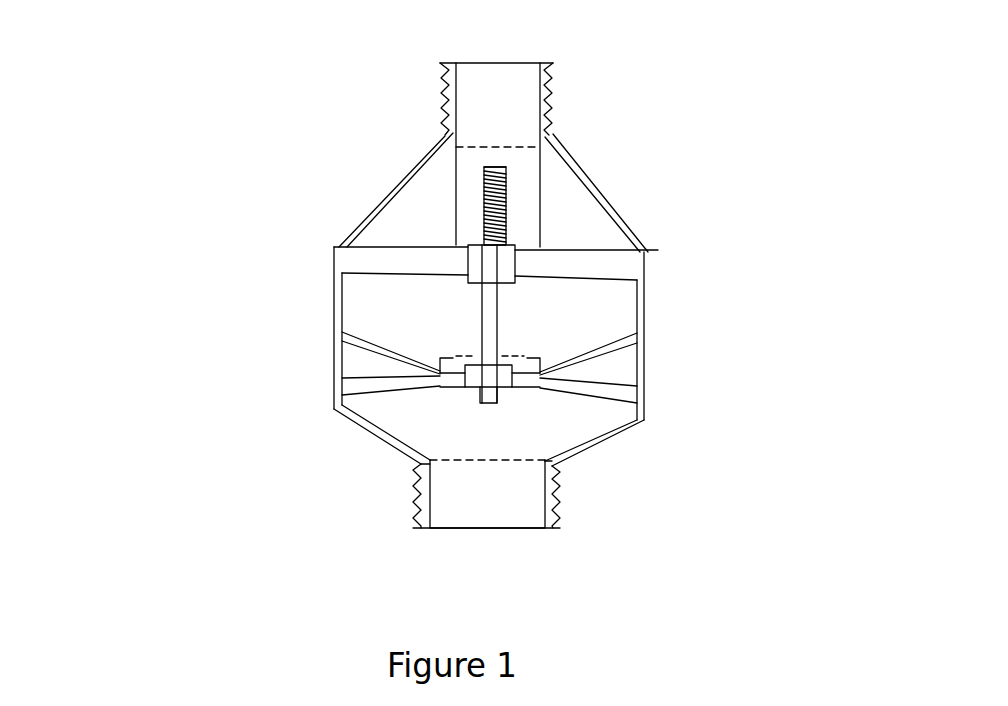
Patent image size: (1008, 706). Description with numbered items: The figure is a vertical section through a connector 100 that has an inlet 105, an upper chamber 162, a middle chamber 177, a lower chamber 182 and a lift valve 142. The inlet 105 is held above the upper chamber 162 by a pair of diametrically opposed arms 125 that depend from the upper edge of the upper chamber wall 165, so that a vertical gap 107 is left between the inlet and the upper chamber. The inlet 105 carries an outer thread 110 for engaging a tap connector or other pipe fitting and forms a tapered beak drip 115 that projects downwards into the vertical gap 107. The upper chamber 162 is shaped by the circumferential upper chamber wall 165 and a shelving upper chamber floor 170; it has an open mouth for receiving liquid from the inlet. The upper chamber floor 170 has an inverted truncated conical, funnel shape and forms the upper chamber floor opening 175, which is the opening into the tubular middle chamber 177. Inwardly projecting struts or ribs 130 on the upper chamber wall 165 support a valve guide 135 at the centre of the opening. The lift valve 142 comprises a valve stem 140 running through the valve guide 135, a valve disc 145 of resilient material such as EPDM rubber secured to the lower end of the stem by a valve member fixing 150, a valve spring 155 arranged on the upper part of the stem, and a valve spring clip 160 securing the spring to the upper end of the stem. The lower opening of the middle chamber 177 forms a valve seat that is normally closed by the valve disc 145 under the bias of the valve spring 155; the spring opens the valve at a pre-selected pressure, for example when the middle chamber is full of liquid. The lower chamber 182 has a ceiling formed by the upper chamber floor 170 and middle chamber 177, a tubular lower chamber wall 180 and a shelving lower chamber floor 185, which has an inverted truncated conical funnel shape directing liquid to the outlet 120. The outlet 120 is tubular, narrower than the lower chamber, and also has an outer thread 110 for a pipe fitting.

The connector 100 is at (197, 220).
The inlet 105 is at (518, 62).
The vertical gap 107 is at (455, 203).
The outer thread 110 is at (450, 92).
The tapered beak drip 115 is at (455, 145).
The outlet 120 is at (483, 518).
The arms 125 is at (400, 188).
The struts/ribs 130 is at (350, 241).
The valve guide 135 is at (520, 250).
The valve stem 140 is at (498, 308).
The lift valve 142 is at (510, 338).
The valve member/disc 145 is at (445, 388).
The valve member fixing 150 is at (505, 389).
The valve spring 155 is at (505, 193).
The valve spring clip 160 is at (500, 157).
The upper chamber 162 is at (357, 287).
The upper chamber wall 165 is at (372, 318).
The upper chamber floor 170 is at (612, 342).
The upper chamber floor opening 175 is at (545, 358).
The middle chamber 177 is at (430, 372).
The lower chamber wall 180 is at (375, 357).
The lower chamber 182 is at (537, 412).
The lower chamber floor 185 is at (565, 462).